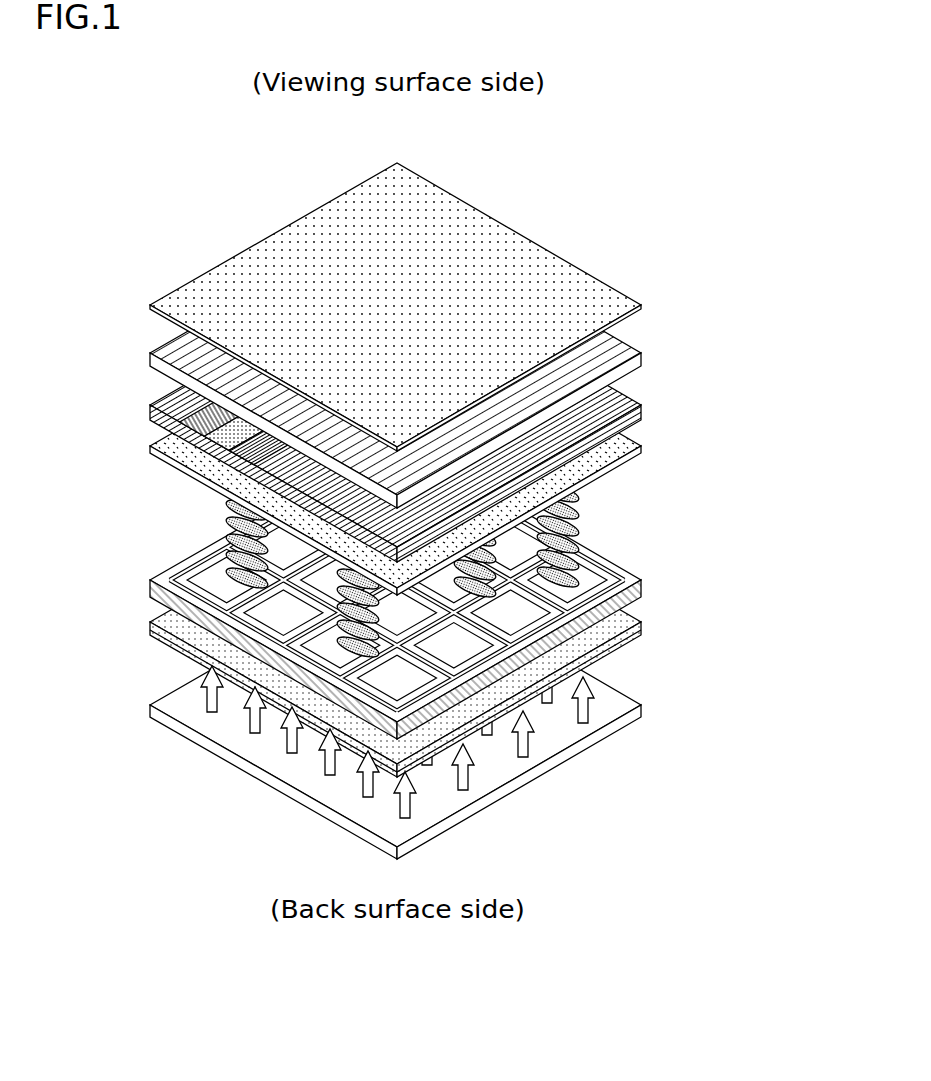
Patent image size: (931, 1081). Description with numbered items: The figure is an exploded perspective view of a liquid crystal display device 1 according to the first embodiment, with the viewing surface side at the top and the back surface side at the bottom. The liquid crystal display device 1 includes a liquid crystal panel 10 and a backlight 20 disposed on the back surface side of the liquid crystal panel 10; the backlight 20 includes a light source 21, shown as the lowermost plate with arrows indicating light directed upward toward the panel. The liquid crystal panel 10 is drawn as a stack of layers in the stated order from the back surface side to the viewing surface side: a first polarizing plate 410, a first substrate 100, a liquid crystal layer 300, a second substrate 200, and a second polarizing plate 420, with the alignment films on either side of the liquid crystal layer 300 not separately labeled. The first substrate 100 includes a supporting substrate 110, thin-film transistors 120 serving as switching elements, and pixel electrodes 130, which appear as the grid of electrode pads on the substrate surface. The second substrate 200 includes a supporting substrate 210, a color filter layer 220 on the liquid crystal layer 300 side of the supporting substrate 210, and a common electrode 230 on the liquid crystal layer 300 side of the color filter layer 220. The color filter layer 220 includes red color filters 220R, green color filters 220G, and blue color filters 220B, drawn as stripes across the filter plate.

The liquid crystal display device 1 is at (212, 182).
The liquid crystal panel 10 is at (450, 490).
The backlight 20 is at (450, 711).
The light source 21 is at (613, 708).
The first substrate 100 is at (476, 628).
The supporting substrate 110 is at (476, 628).
The thin-film transistors 120 is at (440, 588).
The pixel electrodes 130 is at (600, 573).
The second substrate 200 is at (419, 403).
The supporting substrate 210 is at (640, 340).
The color filter layer 220 is at (383, 412).
The blue color filters 220B is at (222, 430).
The green color filters 220G is at (212, 440).
The red color filters 220R is at (245, 474).
The common electrode 230 is at (640, 443).
The liquid crystal layer 300 is at (598, 527).
The first polarizing plate 410 is at (570, 657).
The second polarizing plate 420 is at (476, 307).